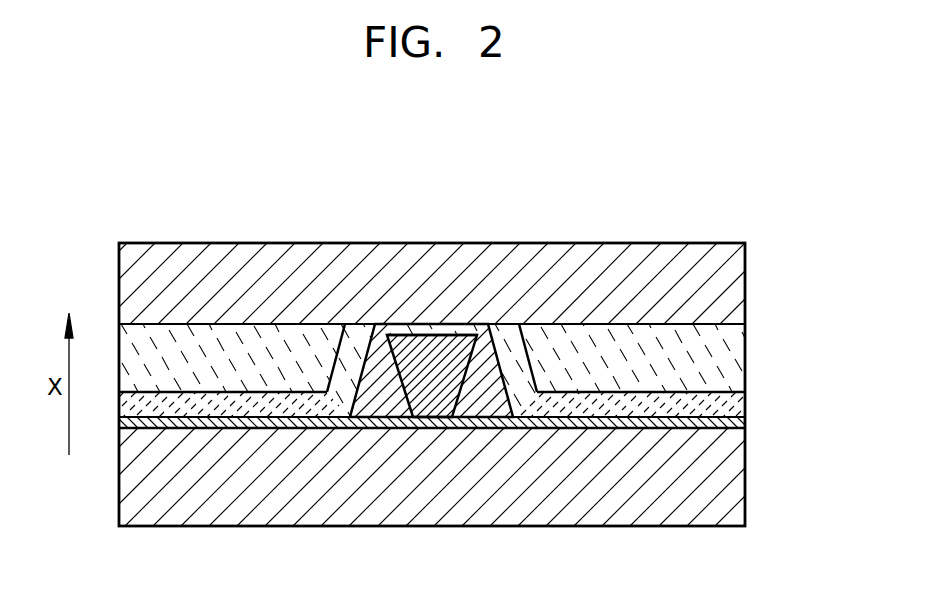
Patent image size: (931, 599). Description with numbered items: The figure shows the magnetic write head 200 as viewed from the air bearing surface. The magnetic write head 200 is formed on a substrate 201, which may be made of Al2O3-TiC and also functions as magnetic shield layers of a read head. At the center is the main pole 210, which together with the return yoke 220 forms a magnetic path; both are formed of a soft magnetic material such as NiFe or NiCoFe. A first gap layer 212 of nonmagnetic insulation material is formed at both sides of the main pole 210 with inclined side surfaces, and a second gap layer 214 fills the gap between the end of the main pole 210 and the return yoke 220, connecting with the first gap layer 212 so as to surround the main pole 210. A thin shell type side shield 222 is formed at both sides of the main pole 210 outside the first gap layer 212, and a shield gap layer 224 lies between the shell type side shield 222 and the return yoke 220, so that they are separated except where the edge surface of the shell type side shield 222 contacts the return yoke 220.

The magnetic write head 200 is at (767, 230).
The substrate 201 is at (738, 477).
The main pole 210 is at (430, 385).
The first gap layer 212 is at (372, 398).
The second gap layer 214 is at (432, 332).
The return yoke 220 is at (738, 283).
The shell type side shield 222 is at (336, 333).
The shield gap layer 224 is at (738, 357).